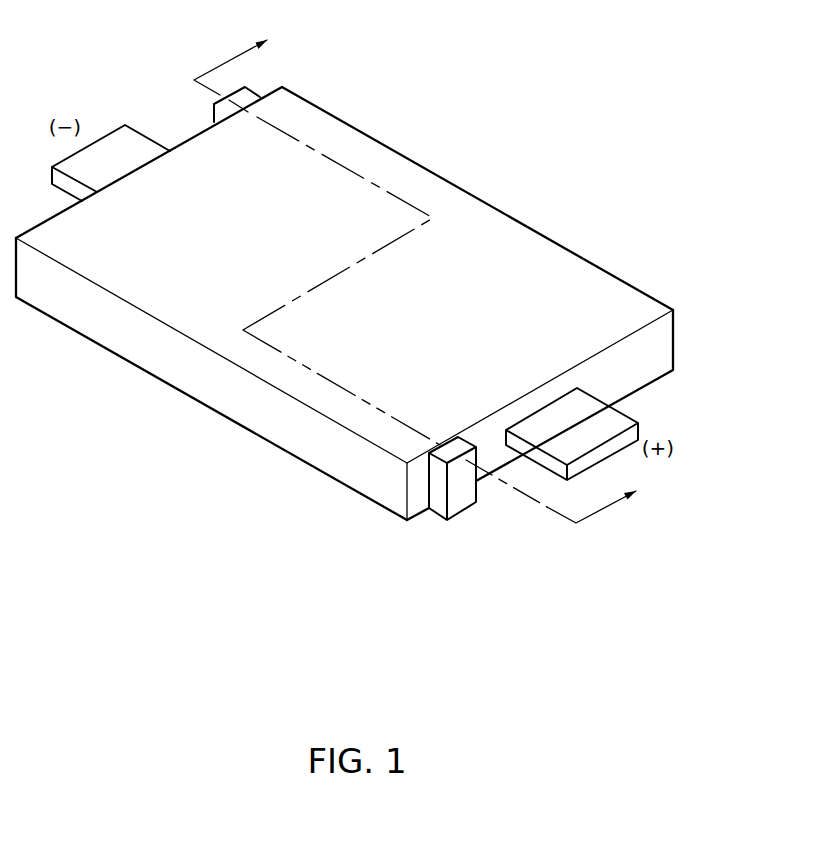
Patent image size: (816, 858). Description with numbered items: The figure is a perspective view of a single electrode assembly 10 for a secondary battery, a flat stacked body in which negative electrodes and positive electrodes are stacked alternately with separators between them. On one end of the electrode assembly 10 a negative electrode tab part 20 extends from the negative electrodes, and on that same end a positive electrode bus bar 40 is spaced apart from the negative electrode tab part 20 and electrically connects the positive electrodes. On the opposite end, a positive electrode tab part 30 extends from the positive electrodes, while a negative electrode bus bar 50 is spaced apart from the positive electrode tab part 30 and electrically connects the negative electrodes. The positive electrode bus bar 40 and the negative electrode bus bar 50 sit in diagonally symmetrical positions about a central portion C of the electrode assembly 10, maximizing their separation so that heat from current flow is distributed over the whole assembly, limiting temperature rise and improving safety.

The electrode assembly 10 is at (472, 177).
The negative electrode tab part 20 is at (113, 148).
The positive electrode tab part 30 is at (610, 420).
The positive electrode bus bar 40 is at (247, 92).
The negative electrode bus bar 50 is at (440, 495).
The central portion C is at (340, 273).